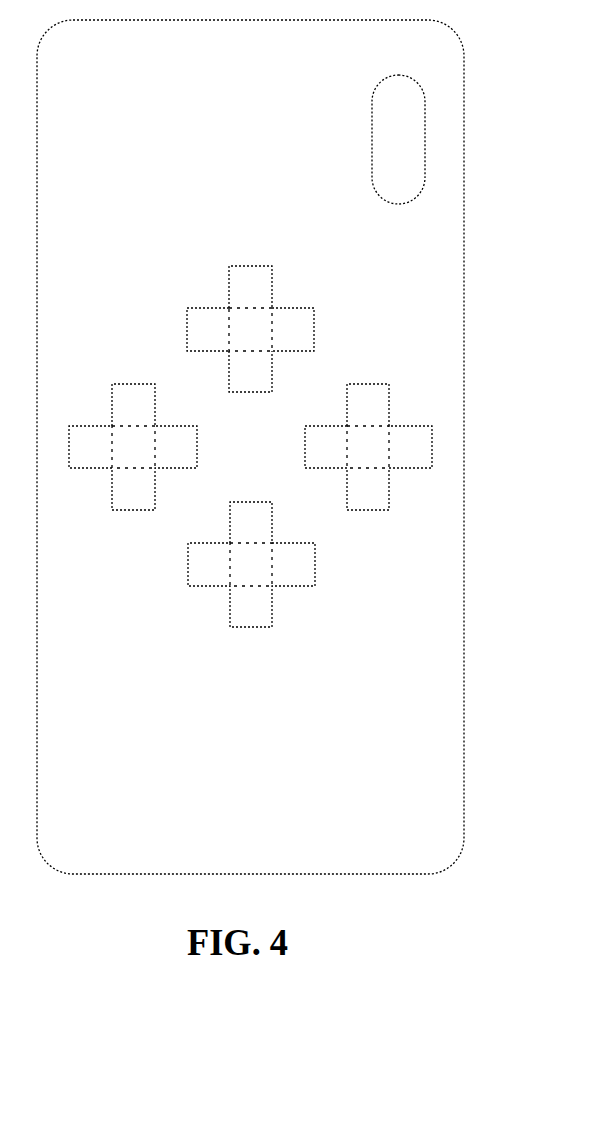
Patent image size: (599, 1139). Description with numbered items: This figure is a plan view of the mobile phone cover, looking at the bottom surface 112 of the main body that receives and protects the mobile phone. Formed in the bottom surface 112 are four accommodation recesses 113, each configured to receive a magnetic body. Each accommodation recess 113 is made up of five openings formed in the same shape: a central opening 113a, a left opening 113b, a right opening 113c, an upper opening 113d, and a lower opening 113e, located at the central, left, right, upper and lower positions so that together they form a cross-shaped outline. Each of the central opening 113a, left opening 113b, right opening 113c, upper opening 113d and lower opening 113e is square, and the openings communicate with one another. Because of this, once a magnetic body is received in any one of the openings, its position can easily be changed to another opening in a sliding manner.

The bottom surface 112 is at (443, 308).
The accommodation recess 113 is at (225, 306).
The central opening 113a is at (262, 320).
The left opening 113b is at (188, 323).
The right opening 113c is at (302, 319).
The upper opening 113d is at (251, 283).
The lower opening 113e is at (252, 383).